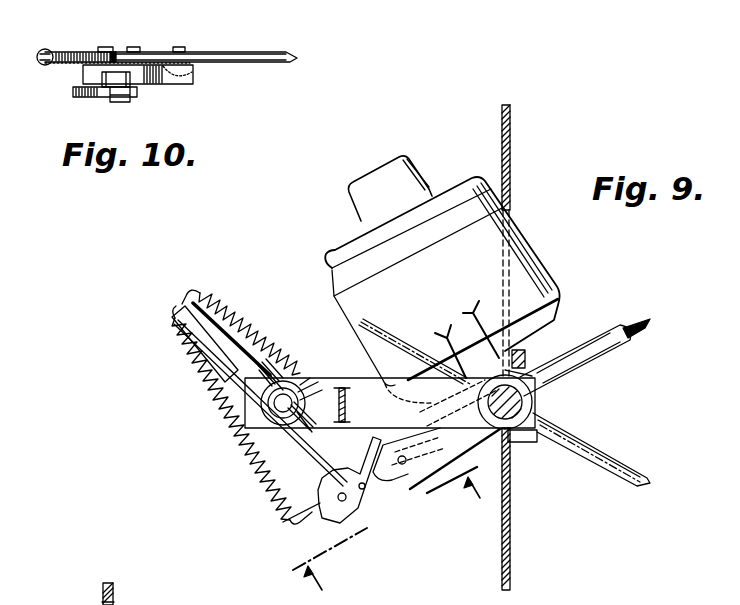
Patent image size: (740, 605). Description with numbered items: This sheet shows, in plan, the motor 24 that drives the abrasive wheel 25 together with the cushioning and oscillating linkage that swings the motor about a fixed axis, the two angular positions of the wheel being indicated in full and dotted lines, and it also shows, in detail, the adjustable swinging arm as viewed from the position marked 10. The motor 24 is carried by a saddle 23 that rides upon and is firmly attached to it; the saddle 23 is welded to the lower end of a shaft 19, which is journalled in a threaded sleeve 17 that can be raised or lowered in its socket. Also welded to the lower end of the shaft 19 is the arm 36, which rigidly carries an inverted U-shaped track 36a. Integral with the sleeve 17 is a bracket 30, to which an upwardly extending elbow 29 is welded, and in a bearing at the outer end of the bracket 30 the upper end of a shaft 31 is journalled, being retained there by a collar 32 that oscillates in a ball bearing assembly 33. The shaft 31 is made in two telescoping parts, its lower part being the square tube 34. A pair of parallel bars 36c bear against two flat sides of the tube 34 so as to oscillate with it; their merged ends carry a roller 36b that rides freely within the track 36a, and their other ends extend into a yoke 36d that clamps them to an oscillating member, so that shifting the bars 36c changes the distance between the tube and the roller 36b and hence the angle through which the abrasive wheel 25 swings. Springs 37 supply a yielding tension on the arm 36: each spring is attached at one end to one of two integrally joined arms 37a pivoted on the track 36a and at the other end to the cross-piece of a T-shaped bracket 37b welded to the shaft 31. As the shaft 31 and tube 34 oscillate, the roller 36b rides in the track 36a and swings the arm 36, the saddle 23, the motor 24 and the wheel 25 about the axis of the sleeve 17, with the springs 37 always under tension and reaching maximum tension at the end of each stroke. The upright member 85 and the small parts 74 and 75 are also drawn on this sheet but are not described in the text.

In FIG. 10, the arm 36 is at (253, 52).
In FIG. 9, the arm 36 is at (176, 334).
In FIG. 10, the inverted U-shaped track 36a is at (194, 78).
In FIG. 9, the inverted U-shaped track 36a is at (385, 496).
In FIG. 10, the roller 36b is at (135, 85).
In FIG. 10, the parallel bars 36c is at (84, 93).
In FIG. 9, the parallel bars 36c is at (207, 375).
In FIG. 9, the yoke 36d is at (282, 336).
In FIG. 10, the springs 37 is at (53, 52).
In FIG. 9, the springs 37 is at (234, 343).
In FIG. 10, the arm 37a is at (70, 53).
In FIG. 9, the arm 37a is at (310, 519).
In FIG. 9, the T-shaped bracket 37b is at (216, 296).
In FIG. 9, the motor 24 is at (468, 178).
In FIG. 9, the vertical bar 85 is at (513, 170).
In FIG. 9, the saddle 23 is at (482, 320).
In FIG. 9, the bracket 30 is at (350, 378).
In FIG. 9, the elbow 29 is at (346, 402).
In FIG. 9, the shaft 31 is at (272, 407).
In FIG. 9, the collar 32 is at (268, 414).
In FIG. 9, the ball bearing assembly 33 is at (281, 430).
In FIG. 9, the tube 34 is at (294, 385).
In FIG. 9, the sleeve 17 is at (534, 410).
In FIG. 9, the shaft 19 is at (535, 442).
In FIG. 9, the abrasive wheel 25 is at (648, 322).
In FIG. 9, the section line 10— 10 is at (382, 534).
In FIG. 9, the post 74 is at (113, 590).
In FIG. 9, the base 75 is at (133, 600).